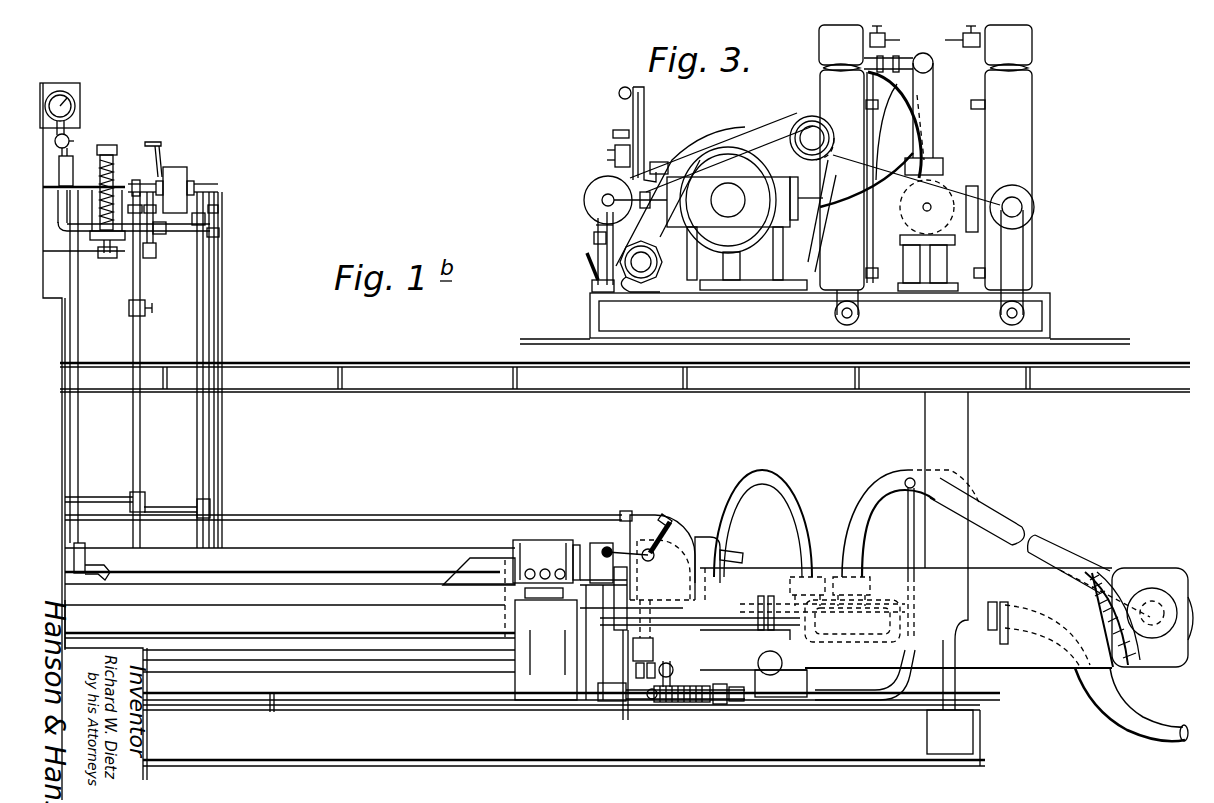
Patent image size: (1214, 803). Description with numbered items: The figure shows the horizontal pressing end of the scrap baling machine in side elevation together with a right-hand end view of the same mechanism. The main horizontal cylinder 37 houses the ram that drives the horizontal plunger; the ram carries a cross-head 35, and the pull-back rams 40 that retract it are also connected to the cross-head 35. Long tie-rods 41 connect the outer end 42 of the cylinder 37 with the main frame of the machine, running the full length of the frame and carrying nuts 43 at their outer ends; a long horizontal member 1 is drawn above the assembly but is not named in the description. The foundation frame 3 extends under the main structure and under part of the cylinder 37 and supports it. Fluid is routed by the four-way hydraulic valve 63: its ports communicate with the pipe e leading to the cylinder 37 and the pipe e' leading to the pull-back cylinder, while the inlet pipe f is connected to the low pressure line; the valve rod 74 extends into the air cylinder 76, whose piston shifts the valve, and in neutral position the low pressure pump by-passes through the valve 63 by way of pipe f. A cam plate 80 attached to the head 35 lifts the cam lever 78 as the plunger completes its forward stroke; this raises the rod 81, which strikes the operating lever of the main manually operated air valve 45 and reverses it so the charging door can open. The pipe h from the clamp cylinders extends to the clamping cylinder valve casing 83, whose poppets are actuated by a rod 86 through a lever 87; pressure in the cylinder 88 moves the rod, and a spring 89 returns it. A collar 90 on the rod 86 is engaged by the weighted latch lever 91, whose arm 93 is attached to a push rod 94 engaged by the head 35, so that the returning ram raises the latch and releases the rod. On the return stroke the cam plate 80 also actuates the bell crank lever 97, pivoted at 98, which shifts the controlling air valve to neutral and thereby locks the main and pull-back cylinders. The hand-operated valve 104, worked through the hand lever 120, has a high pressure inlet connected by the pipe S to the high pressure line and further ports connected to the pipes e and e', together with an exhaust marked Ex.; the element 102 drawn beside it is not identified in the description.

In FIG. 1B, the supporting beam 1 is at (447, 365).
In FIG. 3, the foundation frame 3 is at (800, 328).
In FIG. 1B, the foundation frame 3 is at (571, 729).
In FIG. 3, the cross-head 35 is at (659, 164).
In FIG. 1B, the cross-head 35 is at (562, 673).
In FIG. 3, the main horizontal cylinder 37 is at (740, 175).
In FIG. 1B, the main horizontal cylinder 37 is at (946, 618).
In FIG. 3, the pull-back rams 40 is at (584, 194).
In FIG. 1B, the pull-back rams 40 is at (290, 621).
In FIG. 3, the tie-rods 41 is at (653, 246).
In FIG. 1B, the tie-rods 41 is at (290, 617).
In FIG. 3, the outer end of the cylinder 42 is at (645, 113).
In FIG. 1B, the outer end of the cylinder 42 is at (683, 545).
In FIG. 3, the nuts 43 is at (663, 260).
In FIG. 1B, the nuts 43 is at (738, 552).
In FIG. 1B, the main manually operated air valve 45 is at (74, 172).
In FIG. 3, the four-way hydraulic valve 63 is at (962, 186).
In FIG. 1B, the four-way hydraulic valve 63 is at (826, 668).
In FIG. 3, the valve rod 74 is at (928, 251).
In FIG. 3, the air cylinder 76 is at (940, 199).
In FIG. 1B, the cam lever 78 is at (100, 565).
In FIG. 3, the cam plate 80 is at (613, 154).
In FIG. 1B, the cam plate 80 is at (546, 569).
In FIG. 1B, the rod 81 is at (81, 505).
In FIG. 3, the clamping cylinder valve casing 83 is at (596, 240).
In FIG. 1B, the clamping cylinder valve casing 83 is at (645, 658).
In FIG. 1B, the rod 86 is at (720, 705).
In FIG. 1B, the lever 87 is at (647, 703).
In FIG. 3, the cylinder 88 is at (594, 286).
In FIG. 1B, the cylinder 88 is at (612, 692).
In FIG. 1B, the spring 89 is at (683, 703).
In FIG. 1B, the collar 90 is at (745, 703).
In FIG. 1B, the weighted latch lever 91 is at (800, 676).
In FIG. 3, the arm 93 is at (596, 228).
In FIG. 3, the push rod 94 is at (600, 214).
In FIG. 1B, the push rod 94 is at (720, 632).
In FIG. 3, the bell crank lever 97 is at (632, 104).
In FIG. 1B, the bell crank lever 97 is at (650, 518).
In FIG. 3, the pivot 98 is at (612, 134).
In FIG. 1B, the pivot 98 is at (654, 556).
In FIG. 1B, the relief valve 102 is at (105, 192).
In FIG. 1B, the valve 104 is at (178, 188).
In FIG. 1B, the hand lever 120 is at (160, 146).
In FIG. 3, the pipe e is at (888, 168).
In FIG. 1B, the pipe e is at (659, 396).
In FIG. 3, the pipe e' is at (914, 126).
In FIG. 1B, the pipe e' is at (491, 407).
In FIG. 3, the inlet pipe f is at (886, 246).
In FIG. 1B, the inlet pipe f is at (854, 621).
In FIG. 3, the pipe h is at (584, 262).
In FIG. 1B, the pipe h is at (513, 708).
In FIG. 1B, the pipe S is at (132, 301).
In FIG. 3, the exhaust pipe Ex. is at (979, 248).
In FIG. 1B, the exhaust pipe Ex. is at (196, 301).